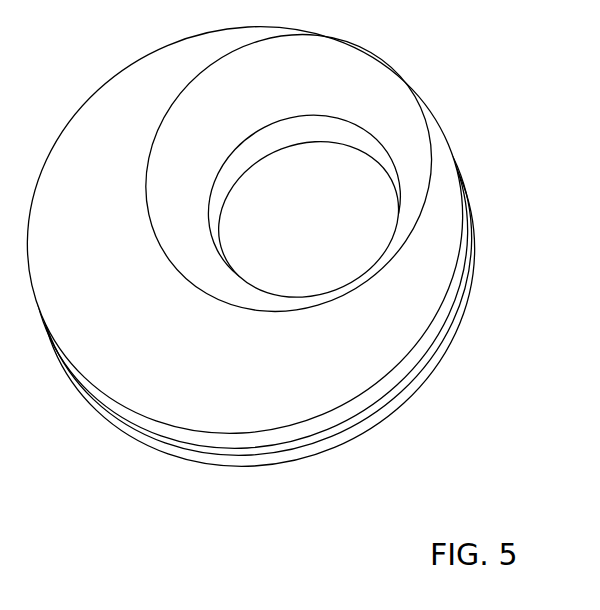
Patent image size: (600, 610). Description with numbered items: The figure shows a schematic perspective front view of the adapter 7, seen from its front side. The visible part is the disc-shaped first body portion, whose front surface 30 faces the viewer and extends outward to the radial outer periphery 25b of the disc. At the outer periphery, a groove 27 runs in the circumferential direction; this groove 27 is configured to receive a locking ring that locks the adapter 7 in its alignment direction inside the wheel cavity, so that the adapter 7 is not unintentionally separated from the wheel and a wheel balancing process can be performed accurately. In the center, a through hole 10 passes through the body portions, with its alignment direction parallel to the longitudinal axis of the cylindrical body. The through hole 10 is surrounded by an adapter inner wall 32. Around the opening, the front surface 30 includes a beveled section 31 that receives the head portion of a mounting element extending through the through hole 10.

The adapter 7 is at (283, 266).
The through hole 10 is at (305, 203).
The radial outer periphery 25b is at (359, 427).
The groove 27 is at (393, 387).
The front surface 30 is at (218, 374).
The beveled section 31 is at (254, 109).
The adapter inner wall 32 is at (305, 128).